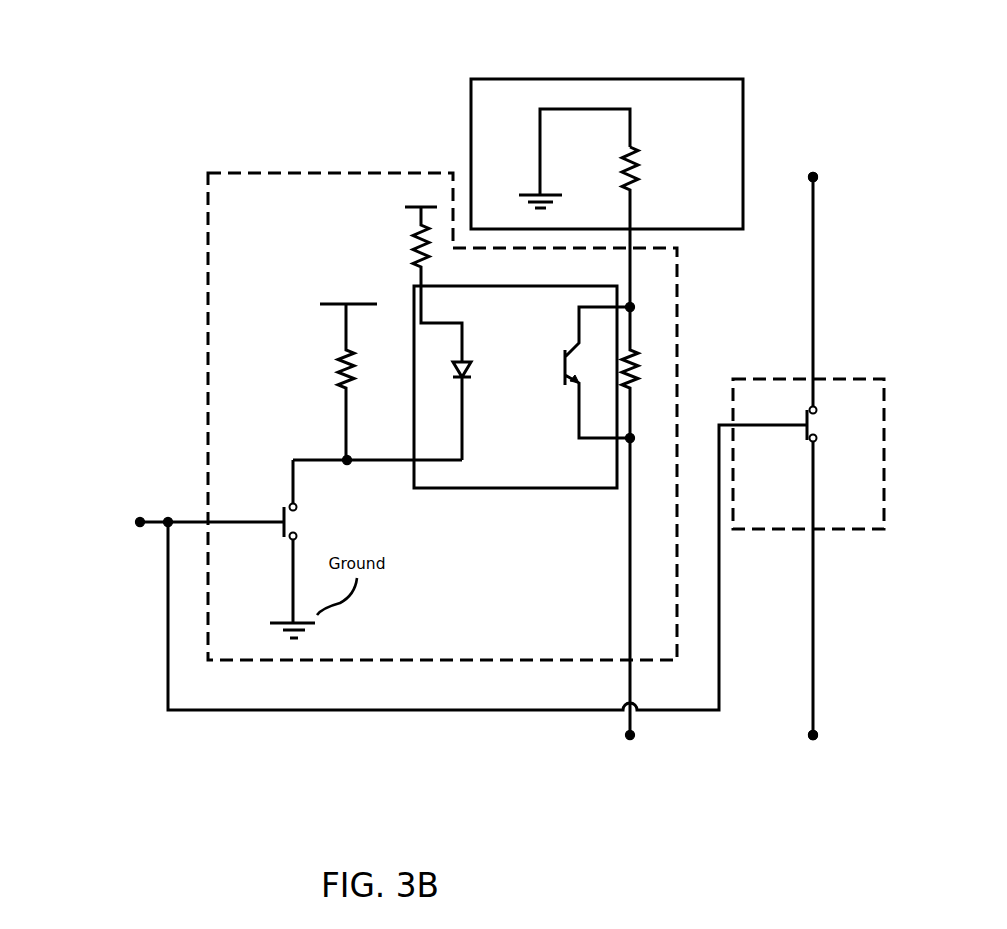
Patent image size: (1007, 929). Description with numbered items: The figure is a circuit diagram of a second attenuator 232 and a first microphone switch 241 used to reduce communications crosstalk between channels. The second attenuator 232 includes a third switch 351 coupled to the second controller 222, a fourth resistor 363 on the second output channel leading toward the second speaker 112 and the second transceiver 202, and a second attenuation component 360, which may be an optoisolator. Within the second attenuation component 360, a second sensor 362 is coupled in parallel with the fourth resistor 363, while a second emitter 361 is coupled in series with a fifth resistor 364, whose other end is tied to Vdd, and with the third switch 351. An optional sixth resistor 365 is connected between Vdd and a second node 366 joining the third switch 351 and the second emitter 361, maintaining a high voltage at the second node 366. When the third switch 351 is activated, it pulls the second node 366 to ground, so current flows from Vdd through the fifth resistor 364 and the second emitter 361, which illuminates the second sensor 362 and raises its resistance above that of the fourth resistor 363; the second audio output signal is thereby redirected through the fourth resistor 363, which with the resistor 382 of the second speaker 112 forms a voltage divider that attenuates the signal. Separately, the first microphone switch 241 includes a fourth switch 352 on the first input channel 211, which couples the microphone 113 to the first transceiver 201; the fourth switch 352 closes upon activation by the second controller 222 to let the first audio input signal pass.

The second speaker 112 is at (743, 79).
The resistor 382 is at (650, 170).
The second attenuator 232 is at (207, 233).
The fifth resistor 364 is at (405, 255).
The sixth resistor 365 is at (327, 383).
The second node 366 is at (353, 453).
The second attenuation component 360 is at (508, 488).
The second sensor 362 is at (476, 367).
The second emitter 361 is at (557, 378).
The fourth resistor 363 is at (647, 345).
The third switch 351 is at (275, 540).
The fourth switch 352 is at (808, 443).
The first microphone switch 241 is at (790, 379).
The first input channel 211 is at (837, 282).
The microphone 113 is at (812, 148).
The second controller 222 is at (405, 567).
The second transceiver 202 is at (629, 768).
The first transceiver 201 is at (812, 768).